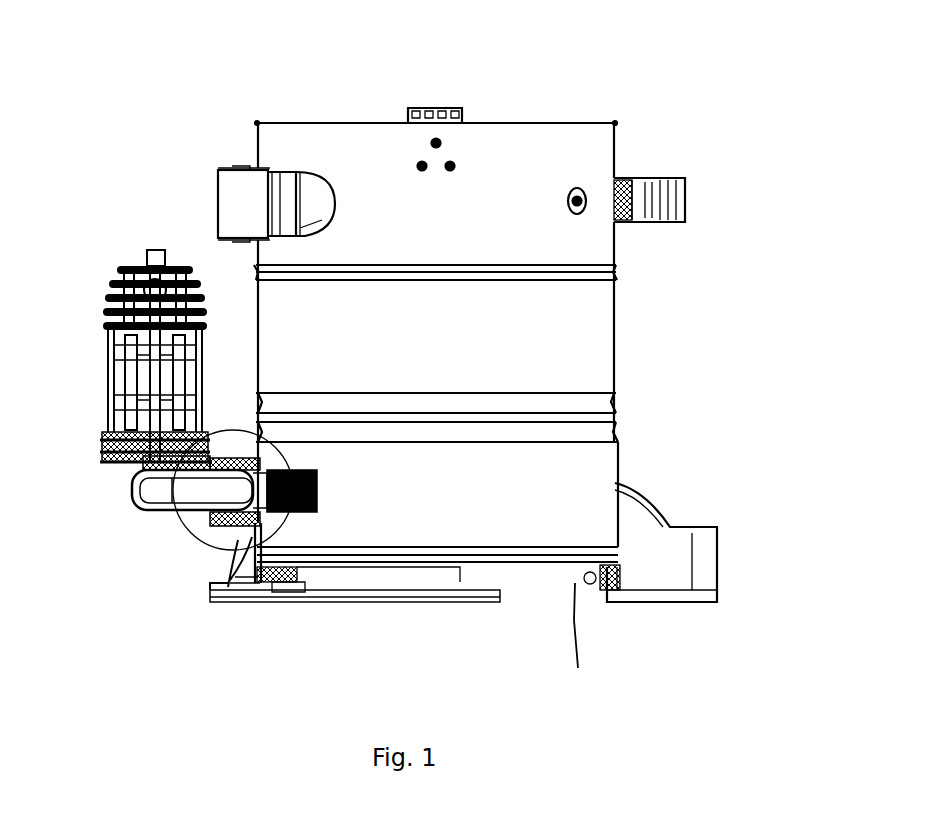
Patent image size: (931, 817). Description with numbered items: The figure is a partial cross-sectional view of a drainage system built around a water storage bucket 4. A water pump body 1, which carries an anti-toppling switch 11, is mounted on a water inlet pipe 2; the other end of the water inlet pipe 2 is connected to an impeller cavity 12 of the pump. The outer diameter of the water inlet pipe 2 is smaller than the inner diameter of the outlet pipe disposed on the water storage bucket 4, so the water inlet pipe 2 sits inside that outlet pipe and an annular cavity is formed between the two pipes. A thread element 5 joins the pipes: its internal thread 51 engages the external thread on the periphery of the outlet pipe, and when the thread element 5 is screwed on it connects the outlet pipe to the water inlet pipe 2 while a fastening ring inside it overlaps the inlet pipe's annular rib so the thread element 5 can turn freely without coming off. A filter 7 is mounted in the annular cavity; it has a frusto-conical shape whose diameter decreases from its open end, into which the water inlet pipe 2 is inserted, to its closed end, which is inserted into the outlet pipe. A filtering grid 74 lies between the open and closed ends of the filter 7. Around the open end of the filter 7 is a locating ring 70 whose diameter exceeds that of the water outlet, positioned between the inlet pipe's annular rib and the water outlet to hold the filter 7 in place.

The water pump body 1 is at (108, 345).
The anti-toppling switch 11 is at (143, 260).
The impeller cavity 12 is at (140, 482).
The water inlet pipe 2 is at (150, 515).
The water storage bucket 4 is at (532, 123).
The thread element 5 is at (223, 517).
The internal thread 51 is at (227, 522).
The filter 7 is at (300, 512).
The locating ring 70 is at (228, 457).
The filtering grid 74 is at (297, 512).